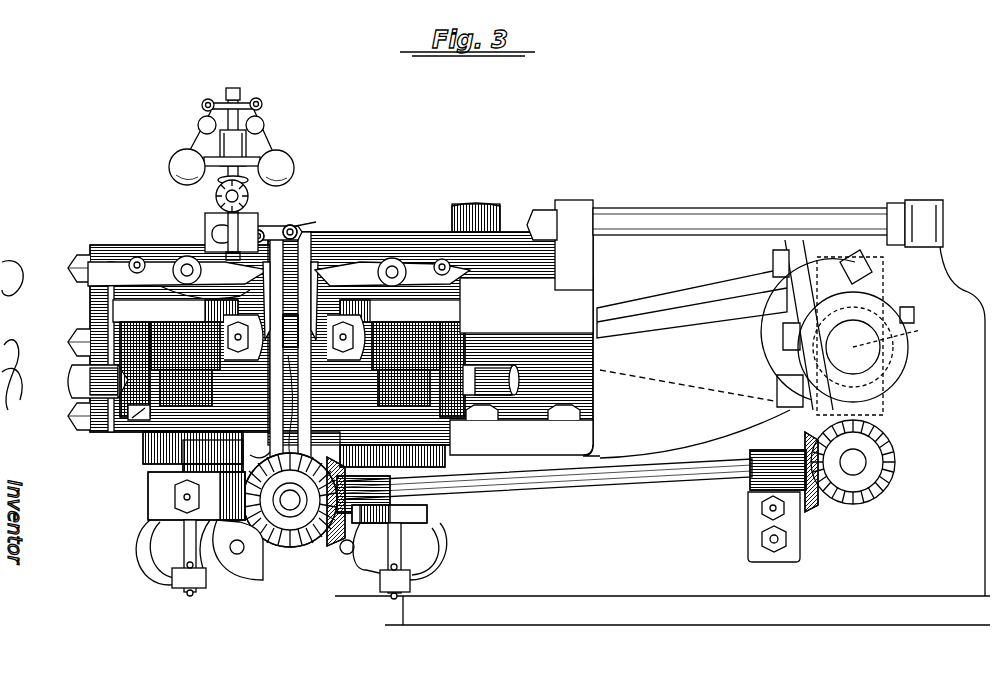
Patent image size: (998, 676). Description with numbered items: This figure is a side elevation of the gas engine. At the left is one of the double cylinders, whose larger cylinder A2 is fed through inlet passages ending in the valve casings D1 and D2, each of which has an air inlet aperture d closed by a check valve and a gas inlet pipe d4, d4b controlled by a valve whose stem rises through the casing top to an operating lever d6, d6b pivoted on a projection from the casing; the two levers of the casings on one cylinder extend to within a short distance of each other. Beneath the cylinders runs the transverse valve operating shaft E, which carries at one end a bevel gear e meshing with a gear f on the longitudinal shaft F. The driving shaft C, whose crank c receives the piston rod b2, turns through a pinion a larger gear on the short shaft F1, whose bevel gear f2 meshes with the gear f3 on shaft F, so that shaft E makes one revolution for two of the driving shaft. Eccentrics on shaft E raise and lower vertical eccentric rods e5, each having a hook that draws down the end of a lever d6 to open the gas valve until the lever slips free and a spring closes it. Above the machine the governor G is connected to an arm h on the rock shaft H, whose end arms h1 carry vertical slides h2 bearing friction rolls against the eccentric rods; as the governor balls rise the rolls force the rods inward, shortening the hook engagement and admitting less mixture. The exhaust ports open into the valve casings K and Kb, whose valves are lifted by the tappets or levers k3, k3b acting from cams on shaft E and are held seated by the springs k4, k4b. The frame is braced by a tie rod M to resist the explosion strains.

The governor G is at (250, 140).
The rock shaft H is at (262, 232).
The arm h is at (249, 230).
The arm h1 is at (297, 229).
The vertical slide h2 is at (314, 225).
The operating lever d6 is at (152, 270).
The operating lever d6b is at (425, 265).
The gas inlet pipe d4 is at (72, 386).
The gas inlet pipe d4b is at (505, 382).
The cylinder of larger area A2 is at (112, 305).
The valve casing D1 is at (178, 356).
The air inlet aperture d is at (150, 440).
The valve casing D2 is at (432, 378).
The valve casing K is at (150, 500).
The valve casing Kb is at (428, 513).
The spring k4 is at (164, 562).
The spring k4b is at (447, 556).
The tappet or lever k3 is at (223, 573).
The tappet or lever k3b is at (352, 570).
The valve operating shaft E is at (290, 503).
The bevel gear e is at (290, 520).
The eccentric rod e5 is at (256, 446).
The gear f is at (328, 533).
The shaft F is at (540, 490).
The short shaft F1 is at (856, 462).
The bevel gear f2 is at (890, 497).
The gear f3 is at (821, 508).
The tie rod M is at (709, 214).
The piston rod b2 is at (684, 310).
The driving shaft C is at (857, 348).
The crank c is at (910, 405).